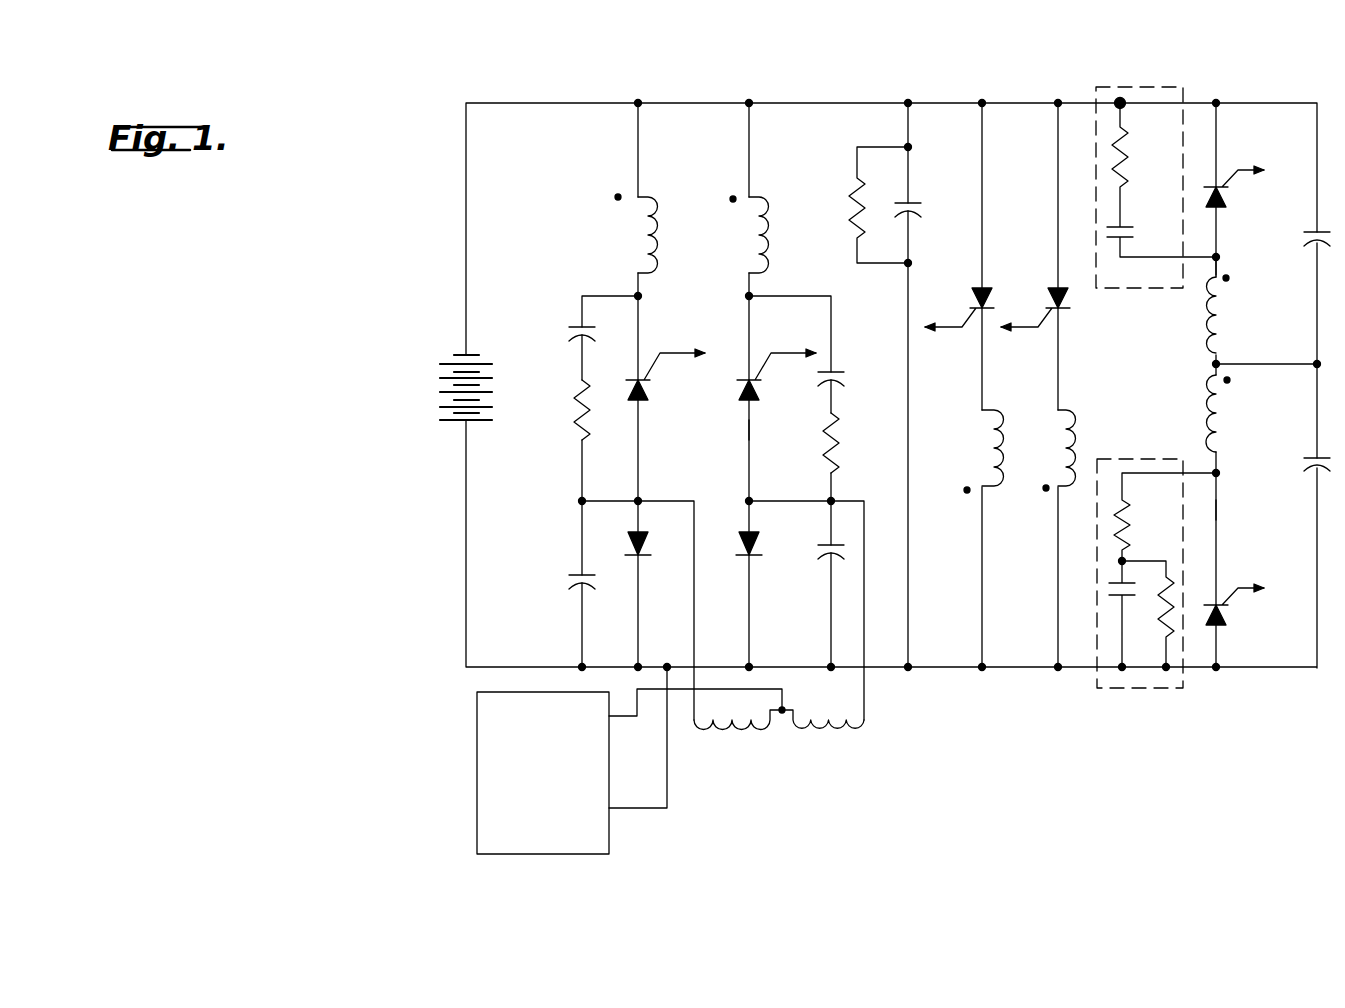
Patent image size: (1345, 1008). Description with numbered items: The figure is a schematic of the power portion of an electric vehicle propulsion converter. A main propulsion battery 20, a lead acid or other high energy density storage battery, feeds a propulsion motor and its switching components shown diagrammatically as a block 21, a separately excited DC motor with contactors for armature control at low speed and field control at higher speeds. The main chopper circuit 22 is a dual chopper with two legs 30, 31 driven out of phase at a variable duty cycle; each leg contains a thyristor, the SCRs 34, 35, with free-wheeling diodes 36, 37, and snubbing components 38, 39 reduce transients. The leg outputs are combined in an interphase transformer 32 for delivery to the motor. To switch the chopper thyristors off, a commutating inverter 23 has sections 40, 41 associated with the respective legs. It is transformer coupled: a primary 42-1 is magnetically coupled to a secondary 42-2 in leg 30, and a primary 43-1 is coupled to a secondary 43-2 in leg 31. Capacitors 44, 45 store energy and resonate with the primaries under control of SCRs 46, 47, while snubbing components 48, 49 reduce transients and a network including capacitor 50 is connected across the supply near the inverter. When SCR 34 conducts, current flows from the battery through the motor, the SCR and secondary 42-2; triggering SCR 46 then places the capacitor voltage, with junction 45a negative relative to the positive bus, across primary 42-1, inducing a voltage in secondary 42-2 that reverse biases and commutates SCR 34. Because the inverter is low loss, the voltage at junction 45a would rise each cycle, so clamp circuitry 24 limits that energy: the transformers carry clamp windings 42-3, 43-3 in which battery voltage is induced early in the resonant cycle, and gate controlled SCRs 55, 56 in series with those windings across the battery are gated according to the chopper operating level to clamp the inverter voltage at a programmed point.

The main propulsion battery 20 is at (440, 400).
The propulsion motor and associated switching components 21 is at (477, 745).
The main chopper circuit 22 is at (694, 309).
The commutating inverter 23 is at (1139, 231).
The clamp circuitry 24 is at (1011, 451).
The chopper leg 30 is at (594, 431).
The chopper leg 31 is at (769, 449).
The interphase transformer 32 is at (814, 745).
The SCR 34 is at (650, 393).
The SCR 35 is at (745, 396).
The free-wheeling diode 36 is at (650, 546).
The free-wheeling diode 37 is at (762, 546).
The snubbing components 38 is at (568, 592).
The snubbing components 39 is at (825, 560).
The commutating inverter section 40 is at (1246, 532).
The commutating inverter section 41 is at (1243, 265).
The transformer primary 42-1 is at (1210, 420).
The transformer secondary 42-2 is at (716, 186).
The clamp winding 42-3 is at (1072, 414).
The transformer primary 43-1 is at (1222, 313).
The transformer secondary 43-2 is at (806, 191).
The clamp winding 43-3 is at (986, 490).
The capacitor 44 is at (1305, 466).
The capacitor 45 is at (1305, 237).
The junction 45a is at (1316, 366).
The SCR 46 is at (1226, 626).
The SCR 47 is at (1230, 198).
The snubbing components 48 is at (1096, 642).
The snubbing components 49 is at (1096, 160).
The capacitor 50 is at (914, 201).
The SCR 55 is at (1057, 290).
The SCR 56 is at (978, 290).